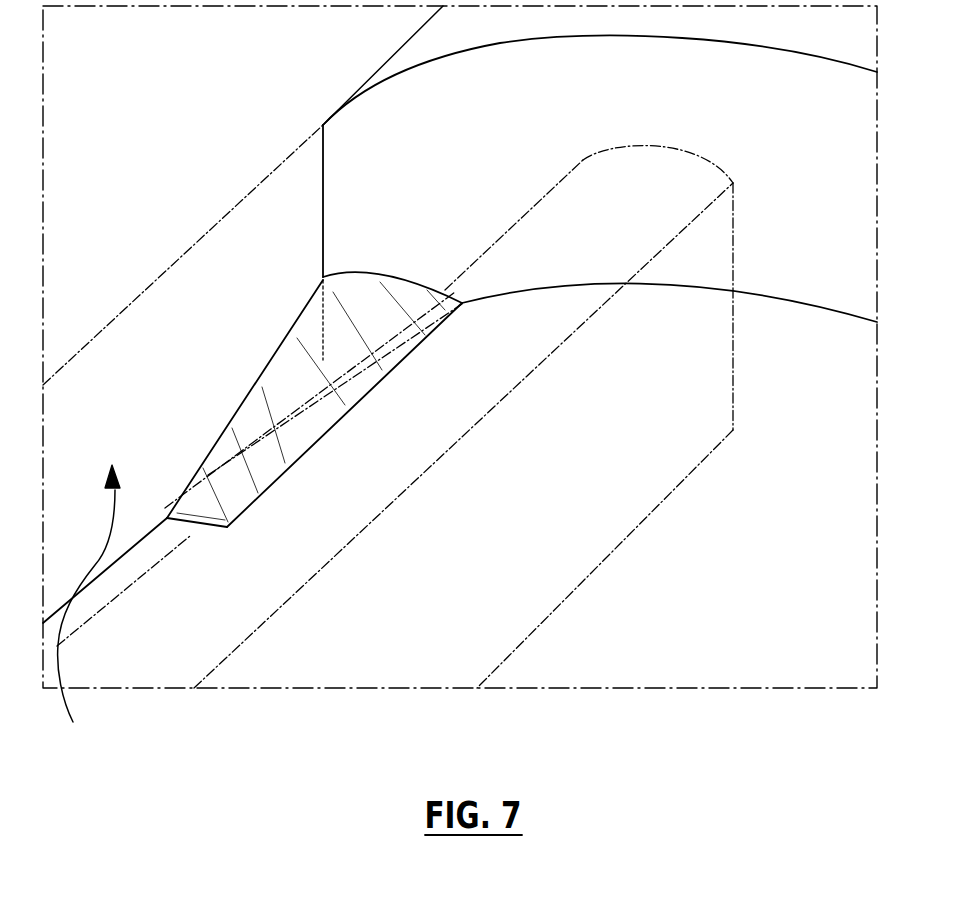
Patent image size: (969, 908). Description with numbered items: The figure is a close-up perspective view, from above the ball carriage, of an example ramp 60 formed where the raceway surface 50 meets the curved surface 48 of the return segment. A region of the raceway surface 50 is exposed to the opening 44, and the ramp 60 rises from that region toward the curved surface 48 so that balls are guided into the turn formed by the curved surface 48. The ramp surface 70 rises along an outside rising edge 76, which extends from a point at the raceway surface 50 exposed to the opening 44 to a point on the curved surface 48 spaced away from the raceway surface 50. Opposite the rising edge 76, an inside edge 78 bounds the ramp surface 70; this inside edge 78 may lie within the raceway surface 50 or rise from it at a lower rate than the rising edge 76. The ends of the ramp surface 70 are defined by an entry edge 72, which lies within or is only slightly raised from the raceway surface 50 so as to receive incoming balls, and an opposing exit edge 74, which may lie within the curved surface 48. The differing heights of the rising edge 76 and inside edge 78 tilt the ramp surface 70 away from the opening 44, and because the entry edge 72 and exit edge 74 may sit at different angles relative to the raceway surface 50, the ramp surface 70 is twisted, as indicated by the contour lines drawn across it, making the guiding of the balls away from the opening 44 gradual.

The opening 44 is at (89, 612).
The curved surface 48 is at (400, 107).
The raceway surface 50 is at (298, 527).
The ramp 60 is at (298, 402).
The ramp surface 70 is at (322, 436).
The entry edge 72 is at (205, 528).
The exit edge 74 is at (385, 276).
The rising edge 76 is at (290, 331).
The inside edge 78 is at (405, 358).